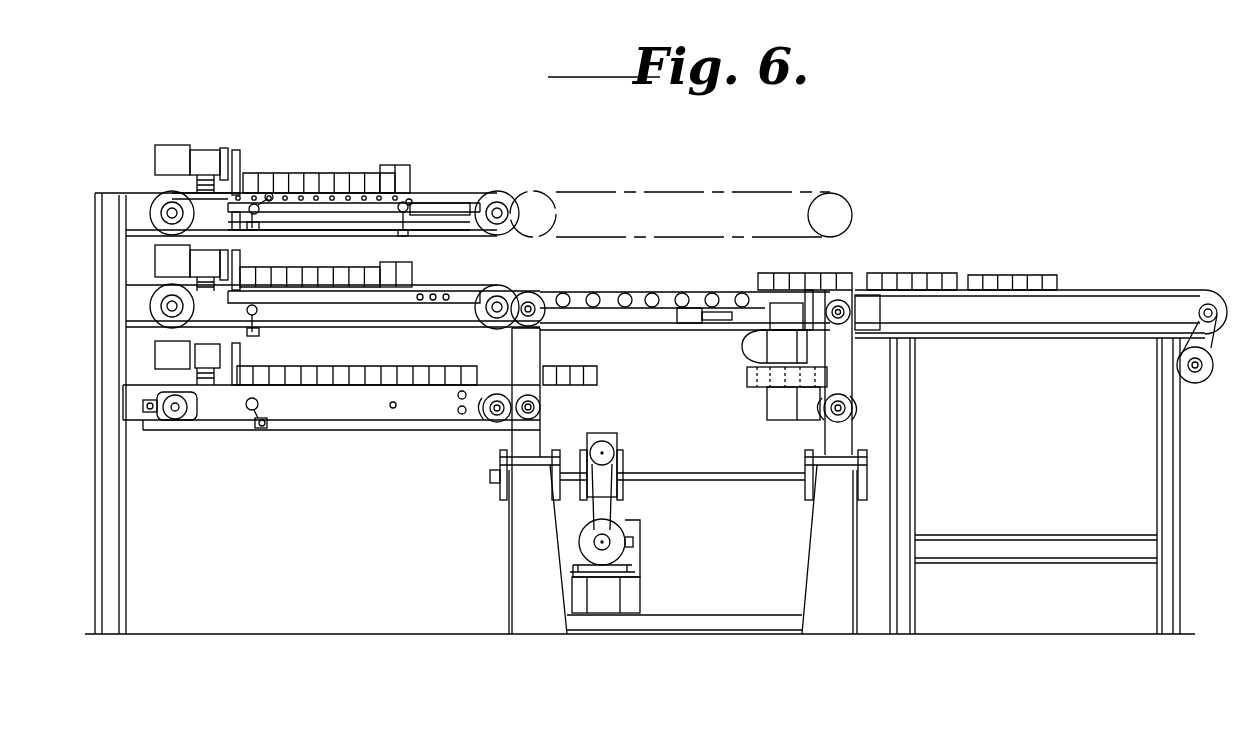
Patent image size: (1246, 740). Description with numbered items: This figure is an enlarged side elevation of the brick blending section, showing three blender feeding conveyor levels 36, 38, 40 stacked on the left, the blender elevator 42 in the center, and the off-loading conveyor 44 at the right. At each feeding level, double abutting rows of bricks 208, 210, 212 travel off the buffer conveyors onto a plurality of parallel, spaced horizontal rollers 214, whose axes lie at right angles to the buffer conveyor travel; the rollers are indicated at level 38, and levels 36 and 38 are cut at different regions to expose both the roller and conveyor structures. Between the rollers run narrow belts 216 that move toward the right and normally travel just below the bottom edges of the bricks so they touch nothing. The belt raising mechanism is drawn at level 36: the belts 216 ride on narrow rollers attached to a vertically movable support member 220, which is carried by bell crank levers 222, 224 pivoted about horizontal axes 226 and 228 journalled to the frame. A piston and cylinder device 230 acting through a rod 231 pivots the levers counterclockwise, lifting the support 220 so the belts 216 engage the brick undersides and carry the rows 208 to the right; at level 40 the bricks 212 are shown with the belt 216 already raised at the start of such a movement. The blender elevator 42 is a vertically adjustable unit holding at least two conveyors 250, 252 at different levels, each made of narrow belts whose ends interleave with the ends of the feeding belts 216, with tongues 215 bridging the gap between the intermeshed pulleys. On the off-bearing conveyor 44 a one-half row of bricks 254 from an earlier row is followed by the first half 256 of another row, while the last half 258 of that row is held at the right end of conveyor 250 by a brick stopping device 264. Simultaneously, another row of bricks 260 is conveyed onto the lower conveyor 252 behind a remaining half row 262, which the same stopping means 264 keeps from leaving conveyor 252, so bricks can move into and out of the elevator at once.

The blender feeding conveyor level 36 is at (311, 214).
The blender feeding conveyor level 38 is at (313, 325).
The blender feeding conveyor level 40 is at (320, 415).
The blender elevator conveyor 42 is at (733, 160).
The off-loading conveyor 44 is at (1045, 240).
The double row of bricks 208 is at (351, 173).
The double row of bricks 210 is at (424, 270).
The double row of bricks 212 is at (413, 354).
The horizontal rollers 214 is at (354, 274).
The tongues 215 is at (517, 192).
The narrow belts 216 is at (470, 192).
The vertically movable support member 220 is at (396, 171).
The bell crank lever 222 is at (276, 216).
The bell crank lever 224 is at (406, 203).
The horizontal pivot axis 226 is at (252, 205).
The horizontal pivot axis 228 is at (407, 232).
The piston and cylinder device 230 is at (236, 228).
The rod 231 is at (343, 228).
The elevator conveyor 250 is at (643, 318).
The elevator conveyor 252 is at (658, 418).
The one-half row of bricks 254 is at (1033, 282).
The first half of a row of bricks 256 is at (907, 280).
The last half of a row of bricks 258 is at (807, 277).
The row of bricks 260 is at (490, 358).
The remaining half row of bricks 262 is at (758, 373).
The brick stopping device 264 is at (760, 293).